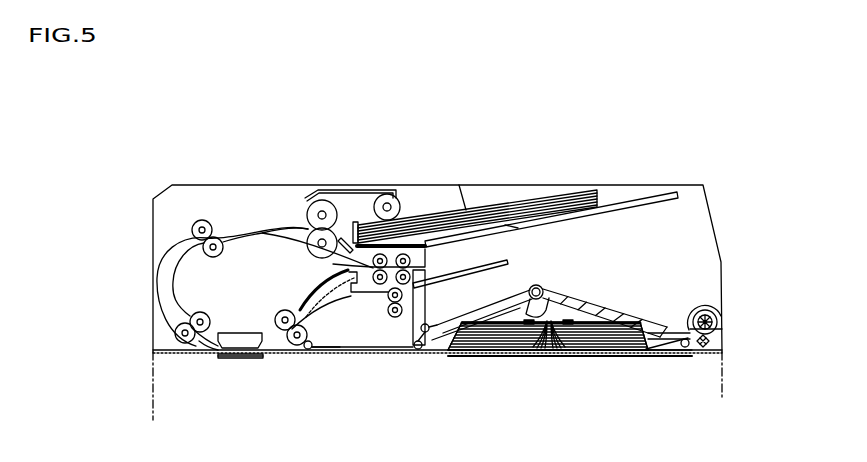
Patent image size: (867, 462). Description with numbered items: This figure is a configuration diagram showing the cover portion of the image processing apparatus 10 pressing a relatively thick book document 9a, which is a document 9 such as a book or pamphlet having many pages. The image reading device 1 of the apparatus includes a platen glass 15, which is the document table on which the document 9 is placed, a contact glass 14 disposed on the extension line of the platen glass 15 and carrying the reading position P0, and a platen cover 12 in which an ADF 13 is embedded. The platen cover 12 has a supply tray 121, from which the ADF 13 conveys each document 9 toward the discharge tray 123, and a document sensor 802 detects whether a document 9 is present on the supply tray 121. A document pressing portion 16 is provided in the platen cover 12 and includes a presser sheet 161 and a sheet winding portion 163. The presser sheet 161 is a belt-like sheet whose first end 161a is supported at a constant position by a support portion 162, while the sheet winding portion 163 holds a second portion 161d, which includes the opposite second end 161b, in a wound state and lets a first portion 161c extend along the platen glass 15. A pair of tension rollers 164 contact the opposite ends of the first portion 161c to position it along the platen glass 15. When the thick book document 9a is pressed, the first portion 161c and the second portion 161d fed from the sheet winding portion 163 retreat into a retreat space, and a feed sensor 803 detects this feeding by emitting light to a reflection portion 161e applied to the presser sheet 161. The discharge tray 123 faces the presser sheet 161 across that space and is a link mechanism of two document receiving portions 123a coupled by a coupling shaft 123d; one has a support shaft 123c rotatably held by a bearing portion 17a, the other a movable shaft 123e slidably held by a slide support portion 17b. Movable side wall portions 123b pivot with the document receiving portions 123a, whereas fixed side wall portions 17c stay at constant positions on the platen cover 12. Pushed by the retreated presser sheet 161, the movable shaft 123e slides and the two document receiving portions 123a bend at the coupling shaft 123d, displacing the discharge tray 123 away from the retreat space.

The image reading device 1 is at (252, 162).
The image processing apparatus 10 is at (153, 140).
The platen cover 12 is at (151, 313).
The ADF 13 is at (174, 216).
The contact glass 14 is at (217, 357).
The reading position P0 is at (237, 356).
The document pressing portion 16 is at (264, 340).
The presser sheet 161 is at (640, 316).
The first end 161a is at (305, 355).
The second end 161b is at (724, 330).
The first portion 161c is at (606, 320).
The second portion 161d is at (722, 312).
The reflection portion 161e is at (722, 332).
The support portion 162 is at (312, 345).
The sheet winding portion 163 is at (722, 281).
The tension rollers 164 is at (710, 346).
The document 9 is at (523, 200).
The book document 9a is at (545, 355).
The platen glass 15 is at (578, 355).
The bearing portion 17a is at (458, 353).
The slide support portion 17b is at (677, 355).
The fixed side wall portions 17c is at (525, 323).
The supply tray 121 is at (660, 193).
The discharge tray 123 is at (660, 316).
The document receiving portions 123a is at (570, 306).
The movable side wall portions 123b is at (468, 388).
The support shaft 123c is at (426, 288).
The coupling shaft 123d is at (500, 300).
The movable shaft 123e is at (653, 347).
The document sensor 802 is at (515, 229).
The feed sensor 803 is at (722, 347).